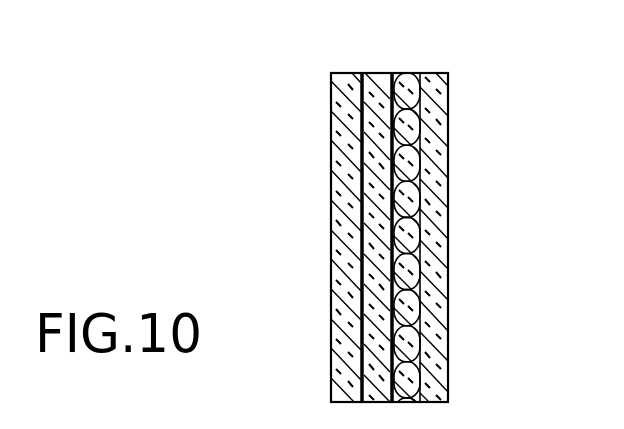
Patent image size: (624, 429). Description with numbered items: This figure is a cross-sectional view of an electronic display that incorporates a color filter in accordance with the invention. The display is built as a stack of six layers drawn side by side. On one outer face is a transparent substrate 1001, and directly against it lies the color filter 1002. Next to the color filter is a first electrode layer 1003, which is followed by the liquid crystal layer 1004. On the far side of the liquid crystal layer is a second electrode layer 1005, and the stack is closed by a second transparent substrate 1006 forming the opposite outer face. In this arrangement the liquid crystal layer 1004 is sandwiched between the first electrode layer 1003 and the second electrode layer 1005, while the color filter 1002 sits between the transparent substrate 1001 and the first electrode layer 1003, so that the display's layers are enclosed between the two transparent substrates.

The transparent substrate 1001 is at (447, 115).
The color filter 1002 is at (403, 162).
The first electrode layer 1003 is at (392, 72).
The liquid crystal layer 1004 is at (372, 161).
The second electrode layer 1005 is at (361, 72).
The second transparent substrate 1006 is at (331, 99).